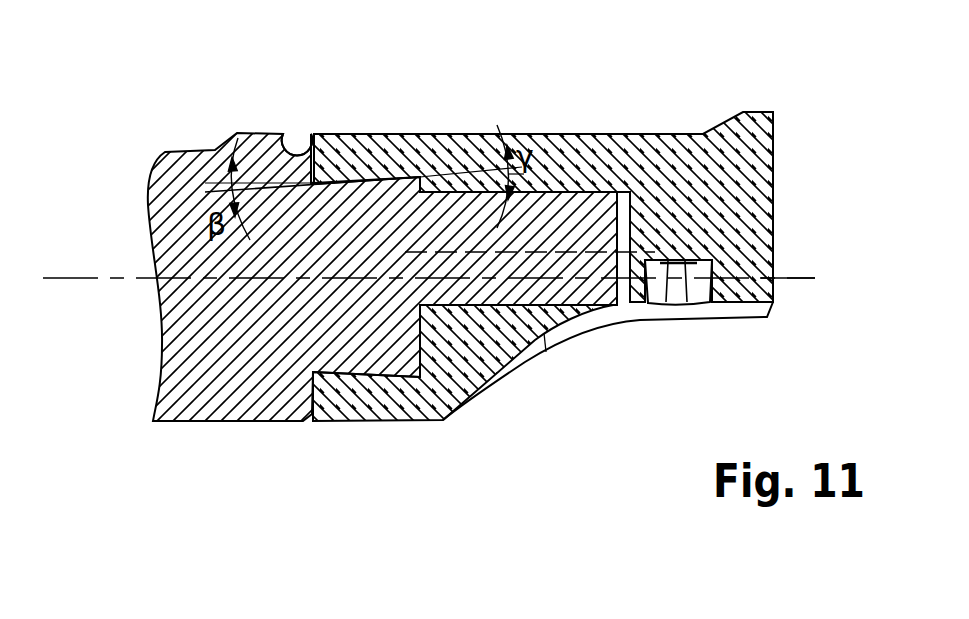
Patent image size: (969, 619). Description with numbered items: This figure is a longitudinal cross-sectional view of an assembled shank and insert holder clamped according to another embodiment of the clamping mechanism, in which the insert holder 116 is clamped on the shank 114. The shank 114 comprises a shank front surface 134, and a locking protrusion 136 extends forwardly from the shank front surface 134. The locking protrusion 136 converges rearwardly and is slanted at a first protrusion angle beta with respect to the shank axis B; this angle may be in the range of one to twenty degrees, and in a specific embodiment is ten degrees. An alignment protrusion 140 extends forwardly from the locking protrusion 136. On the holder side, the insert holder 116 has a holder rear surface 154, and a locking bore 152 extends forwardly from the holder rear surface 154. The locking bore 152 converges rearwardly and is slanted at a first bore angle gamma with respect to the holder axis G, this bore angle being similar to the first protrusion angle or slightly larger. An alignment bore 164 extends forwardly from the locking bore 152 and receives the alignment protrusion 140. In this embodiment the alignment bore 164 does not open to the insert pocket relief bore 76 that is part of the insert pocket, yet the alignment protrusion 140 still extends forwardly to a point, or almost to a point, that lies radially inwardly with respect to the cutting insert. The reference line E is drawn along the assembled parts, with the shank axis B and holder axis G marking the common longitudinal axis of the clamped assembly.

The shank 114 is at (202, 383).
The insert holder 116 is at (668, 168).
The shank front surface 134 is at (318, 133).
The locking protrusion 136 is at (363, 180).
The alignment protrusion 140 is at (567, 192).
The locking bore 152 is at (420, 377).
The holder rear surface 154 is at (282, 134).
The alignment bore 164 is at (620, 302).
The insert pocket relief bore 76 is at (680, 299).
The shank axis B is at (98, 277).
The holder axis G is at (793, 278).
The plane E is at (430, 252).